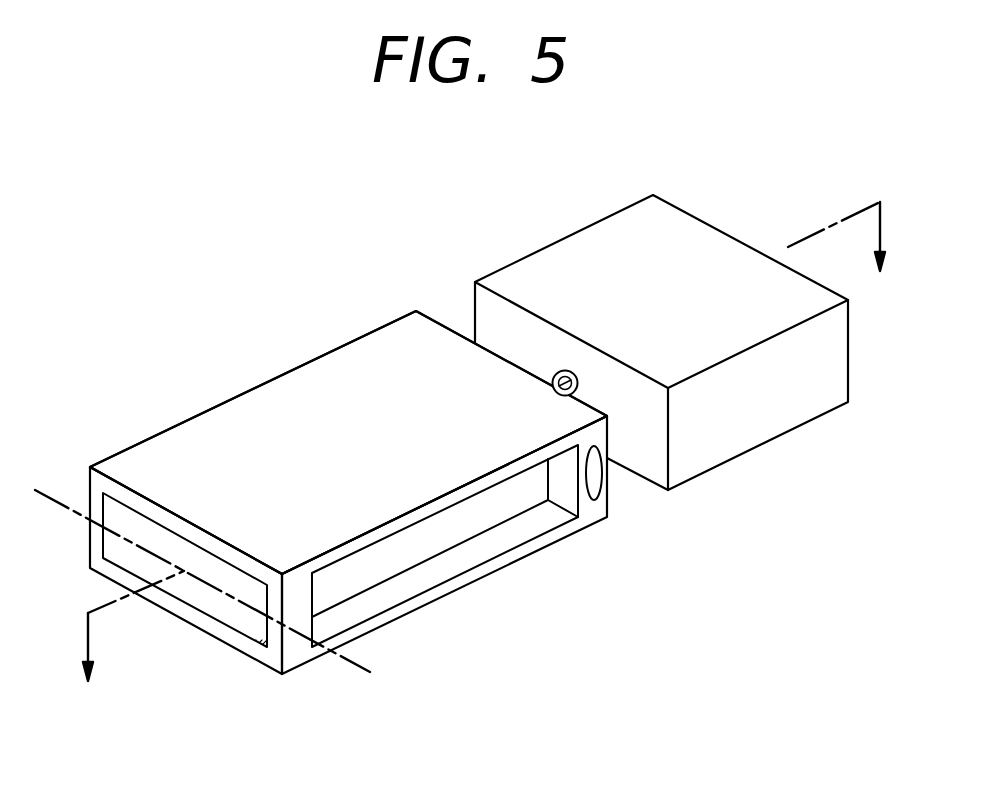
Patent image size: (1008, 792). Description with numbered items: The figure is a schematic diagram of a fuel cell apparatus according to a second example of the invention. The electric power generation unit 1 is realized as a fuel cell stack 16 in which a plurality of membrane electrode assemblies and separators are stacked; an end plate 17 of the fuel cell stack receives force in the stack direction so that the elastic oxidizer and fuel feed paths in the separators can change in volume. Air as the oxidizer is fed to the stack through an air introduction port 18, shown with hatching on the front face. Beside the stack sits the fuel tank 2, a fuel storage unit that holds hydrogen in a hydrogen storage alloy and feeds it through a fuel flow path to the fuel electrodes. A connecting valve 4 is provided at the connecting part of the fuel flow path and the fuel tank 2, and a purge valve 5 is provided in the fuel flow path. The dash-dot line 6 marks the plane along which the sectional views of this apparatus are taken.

The electric power generation unit 1 is at (377, 495).
The fuel tank 2 is at (762, 417).
The connecting valve 4 is at (562, 371).
The purge valve 5 is at (594, 475).
The fuel cell stack 16 is at (343, 385).
The end plate 17 is at (417, 550).
The air introduction port 18 is at (183, 608).
The section line 6- 6 is at (466, 467).